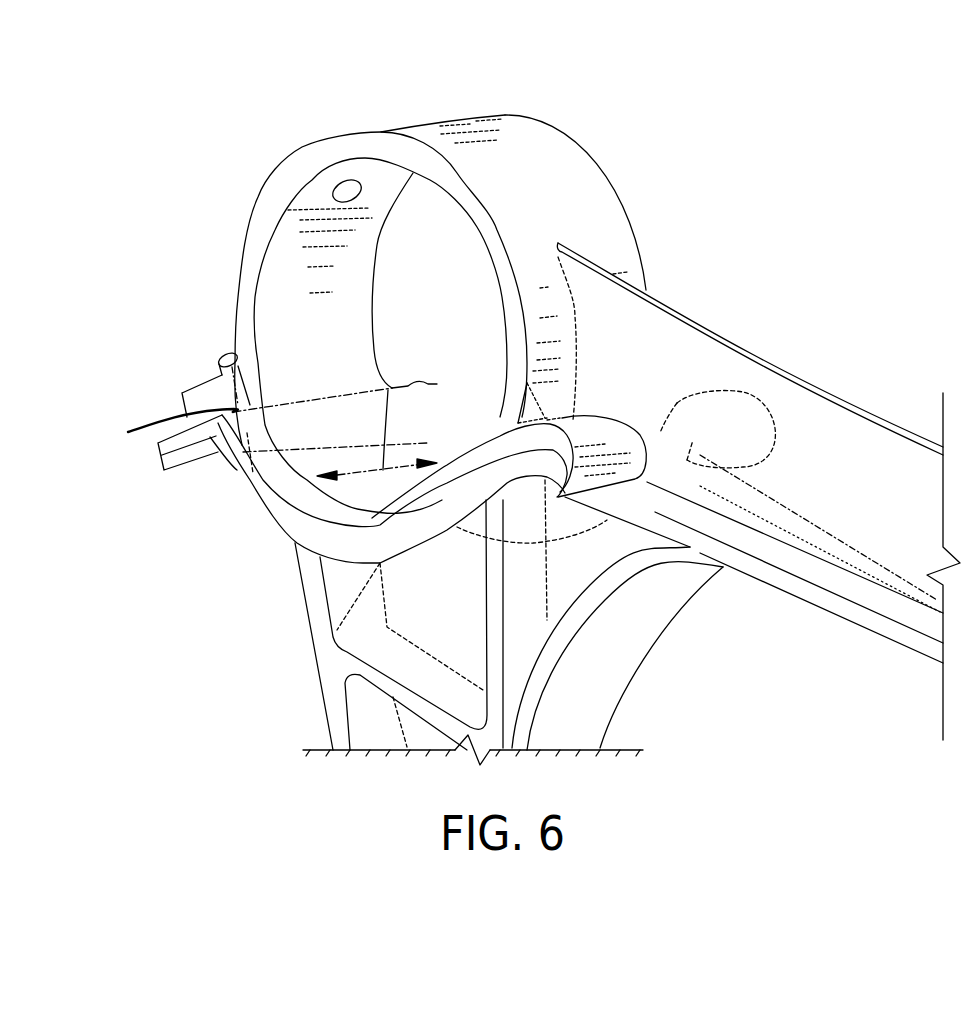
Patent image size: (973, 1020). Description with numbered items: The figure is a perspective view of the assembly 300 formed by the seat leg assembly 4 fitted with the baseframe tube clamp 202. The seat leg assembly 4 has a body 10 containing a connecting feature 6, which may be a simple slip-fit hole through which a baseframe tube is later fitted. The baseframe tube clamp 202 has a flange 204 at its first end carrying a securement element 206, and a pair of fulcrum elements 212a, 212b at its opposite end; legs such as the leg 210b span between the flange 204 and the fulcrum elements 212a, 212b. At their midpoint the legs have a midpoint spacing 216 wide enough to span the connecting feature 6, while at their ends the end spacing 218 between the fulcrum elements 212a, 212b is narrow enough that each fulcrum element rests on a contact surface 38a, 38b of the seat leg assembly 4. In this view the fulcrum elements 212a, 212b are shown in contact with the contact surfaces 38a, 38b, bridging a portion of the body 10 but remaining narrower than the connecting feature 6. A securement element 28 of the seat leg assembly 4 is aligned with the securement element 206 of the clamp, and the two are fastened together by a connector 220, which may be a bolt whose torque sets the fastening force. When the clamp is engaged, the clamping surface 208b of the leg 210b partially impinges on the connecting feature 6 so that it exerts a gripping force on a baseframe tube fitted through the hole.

The assembly 300 is at (633, 90).
The seat leg assembly 4 is at (640, 222).
The connecting feature 6 is at (372, 147).
The seat leg body 10 is at (658, 369).
The midpoint spacing 216 is at (372, 462).
The connector 220 is at (219, 353).
The securement element 28 is at (215, 402).
The securement element 206 is at (262, 434).
The flange 204 is at (190, 473).
The baseframe tube clamp 202 is at (243, 498).
The clamping surface 208b is at (303, 497).
The leg 210b is at (357, 560).
The fulcrum element 212a is at (740, 470).
The fulcrum element 212b is at (557, 494).
The end spacing 218 is at (665, 441).
The contact surface 38a is at (820, 530).
The contact surface 38b is at (760, 530).